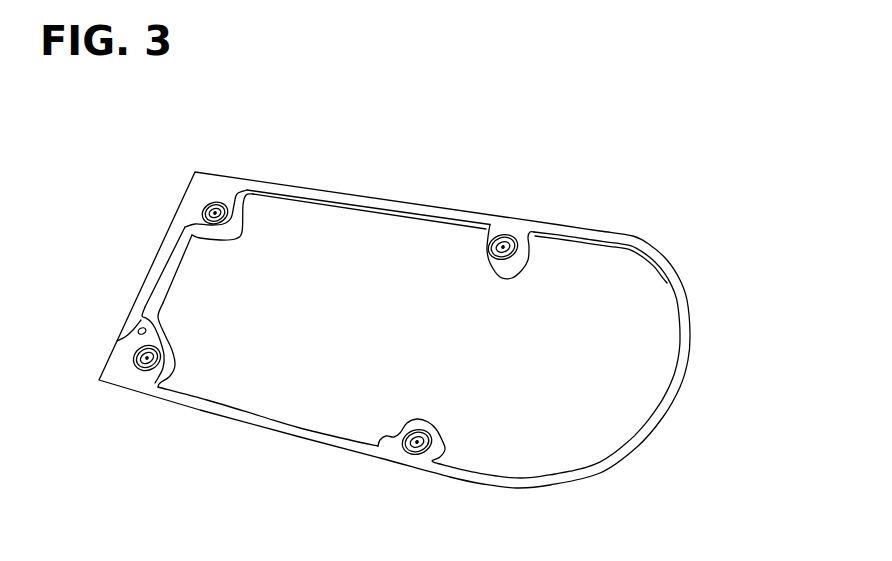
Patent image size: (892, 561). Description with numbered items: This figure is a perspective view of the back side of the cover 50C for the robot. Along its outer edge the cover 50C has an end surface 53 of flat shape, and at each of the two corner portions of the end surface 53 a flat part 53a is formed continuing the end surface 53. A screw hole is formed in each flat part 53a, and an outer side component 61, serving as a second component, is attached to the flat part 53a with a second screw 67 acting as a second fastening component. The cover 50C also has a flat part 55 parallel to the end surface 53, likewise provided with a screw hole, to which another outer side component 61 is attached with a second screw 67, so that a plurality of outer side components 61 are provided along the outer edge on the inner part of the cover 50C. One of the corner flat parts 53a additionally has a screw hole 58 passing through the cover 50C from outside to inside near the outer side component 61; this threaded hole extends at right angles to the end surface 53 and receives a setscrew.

The cover 50C is at (697, 154).
The end surface 53 is at (363, 200).
The flat part 53a is at (207, 192).
The flat part 55 is at (522, 233).
The screw hole 58 is at (136, 328).
The outer side component 61 is at (202, 210).
The second screw 67 is at (215, 204).